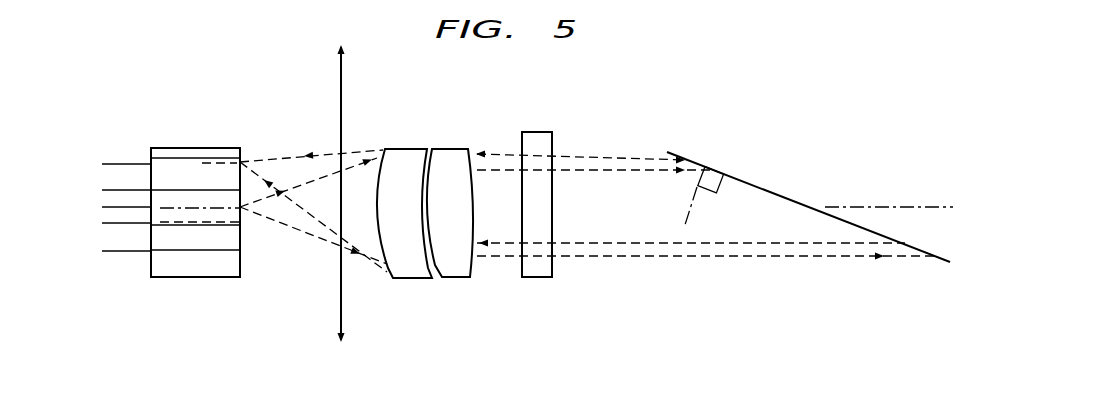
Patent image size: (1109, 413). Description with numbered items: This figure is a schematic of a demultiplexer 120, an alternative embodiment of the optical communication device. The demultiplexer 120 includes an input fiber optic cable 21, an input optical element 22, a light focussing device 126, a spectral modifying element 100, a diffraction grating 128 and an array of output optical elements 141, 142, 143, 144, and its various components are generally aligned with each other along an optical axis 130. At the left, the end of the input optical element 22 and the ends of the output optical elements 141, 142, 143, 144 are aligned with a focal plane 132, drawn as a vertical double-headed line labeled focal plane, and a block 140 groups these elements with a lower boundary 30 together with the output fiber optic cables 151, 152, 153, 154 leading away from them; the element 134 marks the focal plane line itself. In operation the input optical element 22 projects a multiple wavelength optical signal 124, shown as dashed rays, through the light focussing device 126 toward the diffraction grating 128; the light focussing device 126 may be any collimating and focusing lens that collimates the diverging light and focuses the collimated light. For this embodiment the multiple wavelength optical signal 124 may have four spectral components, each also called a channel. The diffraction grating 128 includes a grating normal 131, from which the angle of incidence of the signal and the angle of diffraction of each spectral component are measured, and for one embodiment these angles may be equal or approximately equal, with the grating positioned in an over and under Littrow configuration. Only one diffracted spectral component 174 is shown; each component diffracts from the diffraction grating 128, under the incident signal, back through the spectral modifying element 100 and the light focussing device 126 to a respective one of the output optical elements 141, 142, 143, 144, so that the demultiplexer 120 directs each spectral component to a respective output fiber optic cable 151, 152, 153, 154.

The input fiber optic cable 21 is at (110, 207).
The input optical element 22 is at (220, 207).
The detector array 30 is at (206, 278).
The spectral modifying element 100 is at (537, 132).
The demultiplexer 120 is at (548, 231).
The multiple wavelength optical signal 124 is at (327, 243).
The light focussing device 126 is at (404, 279).
The diffraction grating 128 is at (777, 195).
The optical axis 130 is at (890, 205).
The grating normal 131 is at (690, 214).
The focal plane 132 is at (242, 150).
The focal plane 134 is at (343, 83).
The detector module 140 is at (193, 140).
The output optical element 141 is at (183, 252).
The output optical element 142 is at (203, 223).
The output optical element 143 is at (203, 190).
The output optical element 144 is at (174, 160).
The output fiber optic cable 151 is at (117, 252).
The output fiber optic cable 152 is at (117, 224).
The output fiber optic cable 153 is at (117, 190).
The output fiber optic cable 154 is at (117, 163).
The spectral component 174 is at (640, 160).